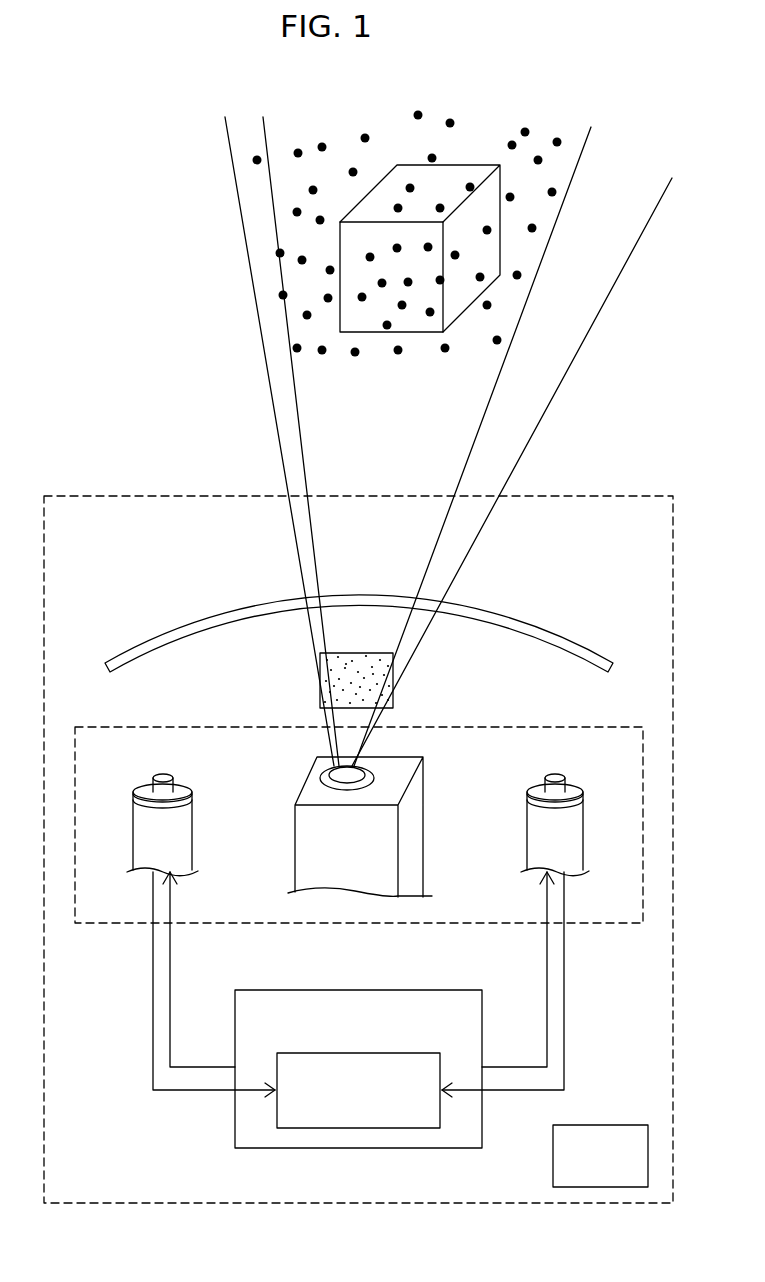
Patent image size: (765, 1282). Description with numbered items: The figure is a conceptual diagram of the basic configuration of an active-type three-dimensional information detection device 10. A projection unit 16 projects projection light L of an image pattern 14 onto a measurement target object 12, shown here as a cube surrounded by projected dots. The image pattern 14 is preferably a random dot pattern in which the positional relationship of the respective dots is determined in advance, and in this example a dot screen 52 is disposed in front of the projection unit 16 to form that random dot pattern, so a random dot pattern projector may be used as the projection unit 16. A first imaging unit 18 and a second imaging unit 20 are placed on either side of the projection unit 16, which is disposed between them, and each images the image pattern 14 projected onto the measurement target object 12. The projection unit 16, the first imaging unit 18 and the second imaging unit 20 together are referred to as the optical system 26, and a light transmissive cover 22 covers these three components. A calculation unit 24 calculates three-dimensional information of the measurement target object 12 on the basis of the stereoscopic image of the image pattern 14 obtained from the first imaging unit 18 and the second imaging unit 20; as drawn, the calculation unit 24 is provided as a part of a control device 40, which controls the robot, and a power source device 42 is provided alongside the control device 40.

The three-dimensional information detection device 10 is at (636, 490).
The measurement target object 12 is at (467, 156).
The image pattern 14 is at (557, 246).
The projection unit 16 is at (423, 832).
The first imaging unit 18 is at (192, 832).
The second imaging unit 20 is at (583, 832).
The light transmissive cover 22 is at (575, 650).
The calculation unit 24 is at (357, 1053).
The optical system 26 is at (548, 727).
The control device 40 is at (445, 990).
The power source device 42 is at (601, 1125).
The dot screen 52 is at (393, 678).
The projection light L is at (548, 397).